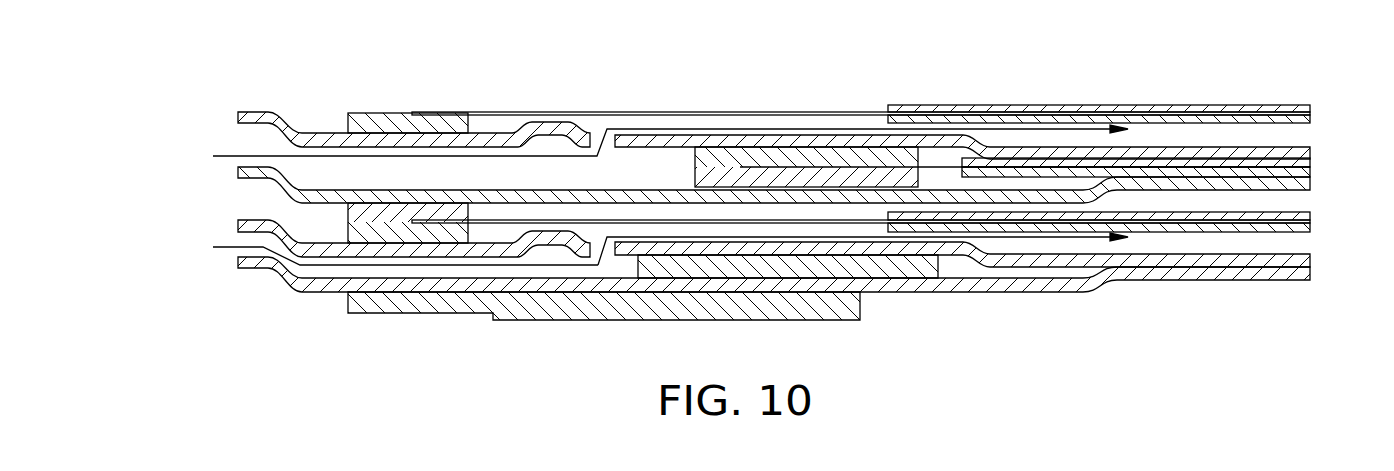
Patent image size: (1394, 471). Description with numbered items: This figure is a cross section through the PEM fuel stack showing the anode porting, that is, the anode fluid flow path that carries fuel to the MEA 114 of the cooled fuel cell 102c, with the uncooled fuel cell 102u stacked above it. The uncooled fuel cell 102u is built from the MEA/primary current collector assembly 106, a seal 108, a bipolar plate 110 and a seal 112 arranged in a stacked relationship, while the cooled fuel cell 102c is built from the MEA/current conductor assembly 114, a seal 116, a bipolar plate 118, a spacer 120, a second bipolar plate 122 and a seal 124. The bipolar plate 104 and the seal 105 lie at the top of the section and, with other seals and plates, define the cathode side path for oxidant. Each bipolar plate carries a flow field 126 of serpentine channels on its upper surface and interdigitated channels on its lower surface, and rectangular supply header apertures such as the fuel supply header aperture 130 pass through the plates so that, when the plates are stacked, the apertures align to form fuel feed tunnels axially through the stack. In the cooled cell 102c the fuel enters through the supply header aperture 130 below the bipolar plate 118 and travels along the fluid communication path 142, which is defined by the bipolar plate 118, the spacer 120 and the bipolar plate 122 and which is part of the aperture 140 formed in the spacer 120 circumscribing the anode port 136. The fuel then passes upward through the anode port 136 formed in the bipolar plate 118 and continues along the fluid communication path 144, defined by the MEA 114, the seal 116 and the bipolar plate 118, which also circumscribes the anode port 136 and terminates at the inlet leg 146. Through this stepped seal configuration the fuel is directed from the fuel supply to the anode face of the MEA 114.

The uncooled fuel cell 102u is at (126, 212).
The cooled fuel cell 102c is at (137, 290).
The bipolar plate 104 is at (1312, 152).
The seal 105 is at (705, 155).
The MEA/primary current collector assembly 106 is at (1312, 160).
The seal 108 is at (702, 181).
The bipolar plate 110 is at (1310, 183).
The seal 112 is at (363, 208).
The MEA/current conductor assembly 114 is at (1312, 220).
The seal 116 is at (353, 235).
The bipolar plate 118 is at (1307, 263).
The spacer 120 is at (900, 268).
The bipolar plate 122 is at (1293, 273).
The seal 124 is at (852, 307).
The flow field 126 is at (1155, 243).
The supply header aperture 130 is at (238, 117).
The anode port 136 is at (614, 250).
The aperture 140 is at (638, 268).
The fluid communication path 142 is at (368, 272).
The fluid communication path 144 is at (688, 232).
The inlet leg 146 is at (845, 232).